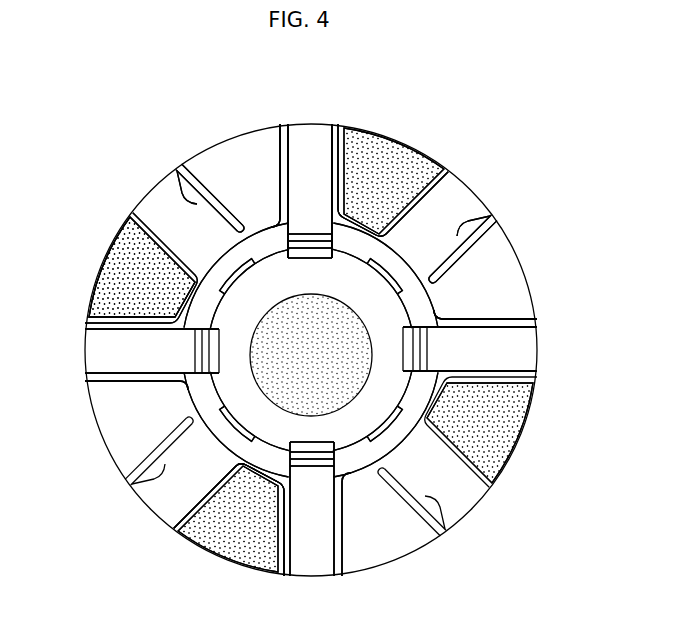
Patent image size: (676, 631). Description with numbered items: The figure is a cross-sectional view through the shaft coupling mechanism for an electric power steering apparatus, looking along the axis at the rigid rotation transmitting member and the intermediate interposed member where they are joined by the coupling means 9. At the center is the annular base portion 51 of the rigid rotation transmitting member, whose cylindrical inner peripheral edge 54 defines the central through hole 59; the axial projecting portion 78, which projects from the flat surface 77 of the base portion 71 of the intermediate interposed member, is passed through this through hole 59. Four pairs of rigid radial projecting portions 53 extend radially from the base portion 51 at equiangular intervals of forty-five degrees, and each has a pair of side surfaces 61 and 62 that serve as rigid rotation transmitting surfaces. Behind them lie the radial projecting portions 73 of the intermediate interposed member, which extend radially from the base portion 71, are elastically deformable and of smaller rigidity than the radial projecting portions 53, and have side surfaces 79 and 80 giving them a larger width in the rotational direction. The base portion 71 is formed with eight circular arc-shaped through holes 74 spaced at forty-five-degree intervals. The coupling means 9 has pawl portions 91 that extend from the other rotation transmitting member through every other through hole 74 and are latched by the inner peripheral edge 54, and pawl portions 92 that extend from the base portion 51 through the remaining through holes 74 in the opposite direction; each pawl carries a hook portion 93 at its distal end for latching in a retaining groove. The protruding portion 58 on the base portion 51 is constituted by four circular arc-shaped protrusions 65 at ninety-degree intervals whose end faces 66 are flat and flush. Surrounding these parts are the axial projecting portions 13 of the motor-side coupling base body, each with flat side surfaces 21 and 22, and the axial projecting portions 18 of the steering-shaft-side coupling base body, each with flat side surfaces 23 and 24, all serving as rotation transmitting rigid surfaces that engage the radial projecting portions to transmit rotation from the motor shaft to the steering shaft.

The coupling means 9 is at (447, 352).
The axial projecting portions 13 is at (516, 262).
The axial projecting portions 18 is at (408, 163).
The flat side surface 21 is at (304, 160).
The flat side surface 22 is at (462, 231).
The flat side surface 23 is at (350, 243).
The flat side surface 24 is at (344, 160).
The annular base portion 51 is at (300, 480).
The radial projecting portions 53 is at (322, 150).
The cylindrical inner peripheral edge 54 is at (135, 468).
The protruding portion 58 is at (150, 262).
The through hole 59 is at (483, 313).
The side surface 61 is at (266, 148).
The side surface 62 is at (347, 162).
The circular arc-shaped protrusions 65 is at (417, 300).
The end faces 66 is at (380, 217).
The base portion 71 is at (408, 545).
The radial projecting portions 73 is at (290, 195).
The circular arc-shaped through holes 74 is at (217, 200).
The flat surface 77 is at (150, 292).
The axial projecting portion 78 is at (500, 397).
The side surface 79 is at (273, 200).
The side surface 80 is at (373, 187).
The pawl portions 91 is at (296, 246).
The pawl portions 92 is at (255, 555).
The hook portion 93 is at (316, 243).